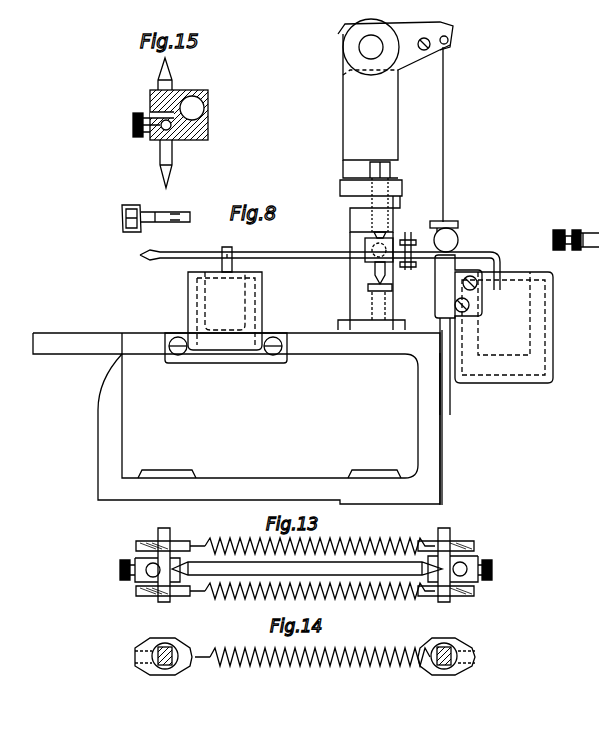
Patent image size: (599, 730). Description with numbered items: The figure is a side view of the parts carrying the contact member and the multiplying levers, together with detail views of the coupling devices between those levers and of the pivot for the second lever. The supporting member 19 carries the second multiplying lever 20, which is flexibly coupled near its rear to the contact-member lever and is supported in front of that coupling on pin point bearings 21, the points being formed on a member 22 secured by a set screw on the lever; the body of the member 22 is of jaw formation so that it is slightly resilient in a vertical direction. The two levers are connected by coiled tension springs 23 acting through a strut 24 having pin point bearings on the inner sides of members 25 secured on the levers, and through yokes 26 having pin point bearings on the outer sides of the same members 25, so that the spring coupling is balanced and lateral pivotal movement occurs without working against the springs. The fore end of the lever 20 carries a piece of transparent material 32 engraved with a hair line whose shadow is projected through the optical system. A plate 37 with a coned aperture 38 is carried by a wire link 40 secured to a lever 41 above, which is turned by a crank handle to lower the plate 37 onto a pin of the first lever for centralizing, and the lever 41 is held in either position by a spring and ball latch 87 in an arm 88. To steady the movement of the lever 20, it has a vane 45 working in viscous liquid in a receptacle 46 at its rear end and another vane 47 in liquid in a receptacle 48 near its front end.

In FIG. 8, the member 19 is at (123, 405).
In FIG. 8, the second multiplying lever 20 is at (312, 252).
In FIG. 15, the pin point bearings 21 is at (160, 76).
In FIG. 8, the pin point bearings 21 is at (372, 236).
In FIG. 15, the member 22 is at (207, 120).
In FIG. 8, the member 22 is at (365, 256).
In FIG. 13, the coiled tension springs 23 is at (384, 546).
In FIG. 14, the coiled tension springs 23 is at (372, 660).
In FIG. 13, the strut 24 is at (342, 568).
In FIG. 13, the members 25 is at (165, 538).
In FIG. 14, the members 25 is at (176, 668).
In FIG. 13, the yokes 26 is at (136, 544).
In FIG. 14, the yokes 26 is at (166, 674).
In FIG. 15, the piece of transparent material 32 is at (124, 212).
In FIG. 8, the plate 37 is at (455, 222).
In FIG. 8, the coned aperture 38 is at (438, 221).
In FIG. 8, the wire link 40 is at (445, 135).
In FIG. 8, the lever 41 is at (446, 31).
In FIG. 8, the vane 45 is at (553, 304).
In FIG. 8, the receptacle 46 is at (553, 336).
In FIG. 8, the vane 47 is at (255, 300).
In FIG. 8, the receptacle 48 is at (188, 308).
In FIG. 8, the spring and ball latch 87 is at (424, 30).
In FIG. 8, the arm 88 is at (410, 60).